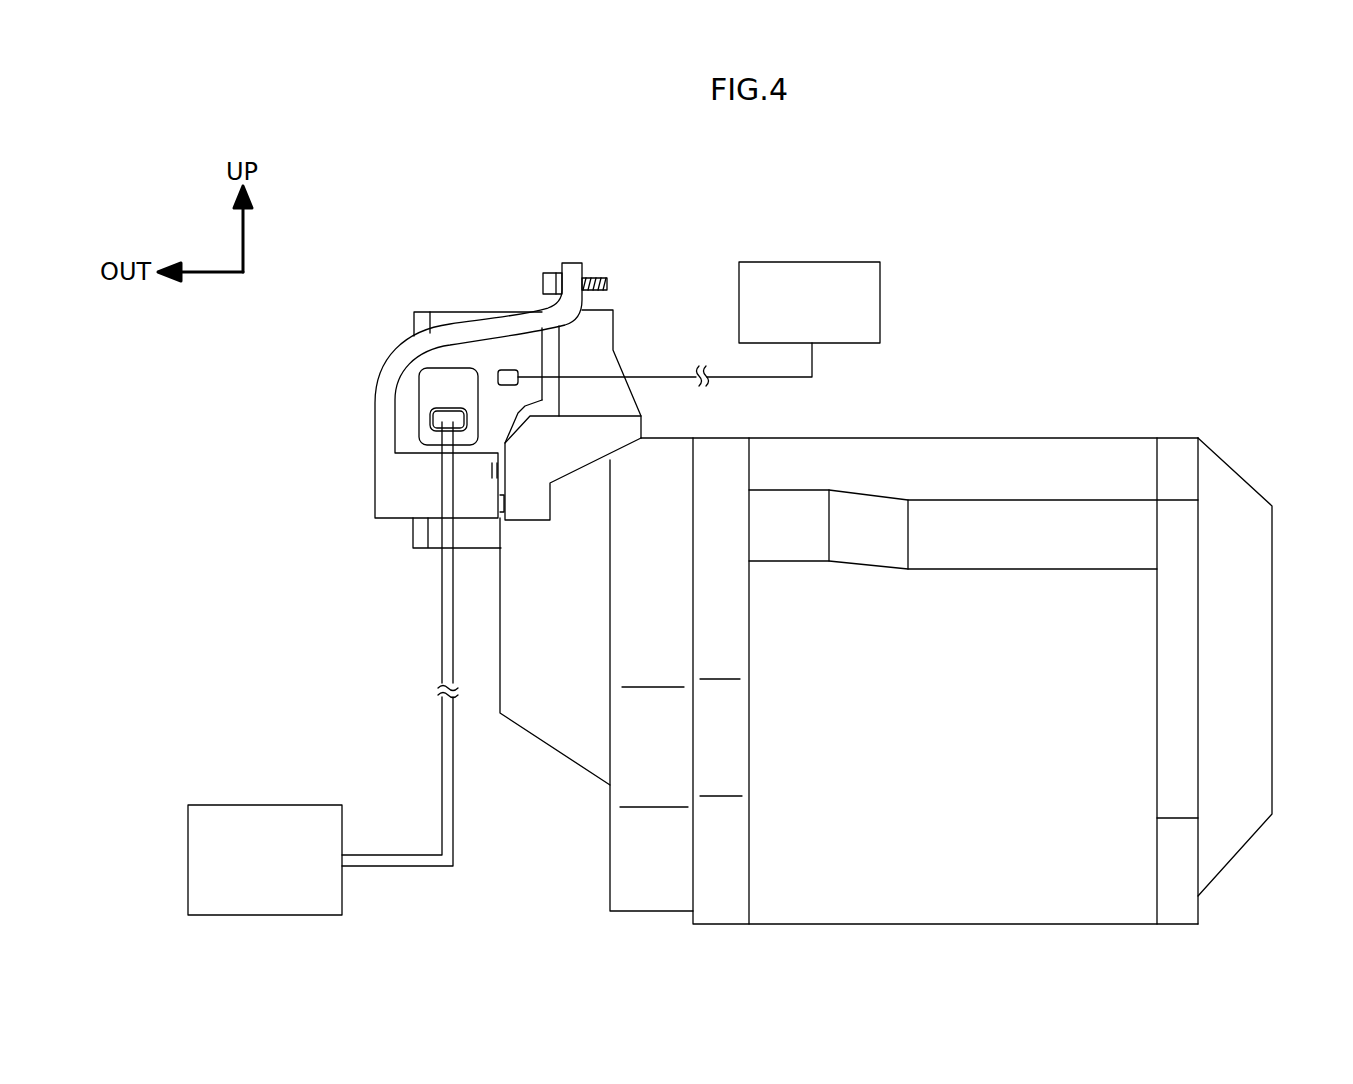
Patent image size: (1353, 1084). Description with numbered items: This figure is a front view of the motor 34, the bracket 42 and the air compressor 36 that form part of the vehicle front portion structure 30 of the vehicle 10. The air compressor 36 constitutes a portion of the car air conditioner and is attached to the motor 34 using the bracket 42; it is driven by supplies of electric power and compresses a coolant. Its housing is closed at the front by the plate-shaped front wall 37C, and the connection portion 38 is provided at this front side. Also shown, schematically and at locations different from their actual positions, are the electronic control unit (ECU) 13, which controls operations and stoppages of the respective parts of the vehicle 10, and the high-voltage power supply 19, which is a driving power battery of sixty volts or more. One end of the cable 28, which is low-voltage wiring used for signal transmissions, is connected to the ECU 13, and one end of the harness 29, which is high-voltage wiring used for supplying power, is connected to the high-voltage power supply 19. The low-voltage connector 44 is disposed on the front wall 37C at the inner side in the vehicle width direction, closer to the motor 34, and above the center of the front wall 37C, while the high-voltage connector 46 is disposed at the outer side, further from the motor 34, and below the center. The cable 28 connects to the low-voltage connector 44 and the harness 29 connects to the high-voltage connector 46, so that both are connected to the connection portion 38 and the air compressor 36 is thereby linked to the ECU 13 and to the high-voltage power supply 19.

The vehicle 10 is at (1157, 262).
The electronic control unit (ECU) 13 is at (808, 261).
The high-voltage power supply 19 is at (263, 803).
The cable 28 is at (662, 374).
The harness 29 is at (442, 637).
The vehicle front portion structure 30 is at (970, 378).
The motor 34 is at (1240, 473).
The air compressor 36 is at (483, 353).
The front wall 37C is at (457, 358).
The connection portion 38 is at (417, 426).
The bracket 42 is at (375, 403).
The low-voltage connector 44 is at (508, 366).
The high-voltage connector 46 is at (445, 407).